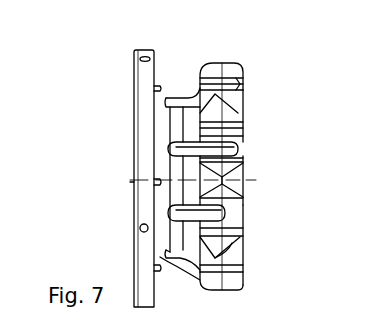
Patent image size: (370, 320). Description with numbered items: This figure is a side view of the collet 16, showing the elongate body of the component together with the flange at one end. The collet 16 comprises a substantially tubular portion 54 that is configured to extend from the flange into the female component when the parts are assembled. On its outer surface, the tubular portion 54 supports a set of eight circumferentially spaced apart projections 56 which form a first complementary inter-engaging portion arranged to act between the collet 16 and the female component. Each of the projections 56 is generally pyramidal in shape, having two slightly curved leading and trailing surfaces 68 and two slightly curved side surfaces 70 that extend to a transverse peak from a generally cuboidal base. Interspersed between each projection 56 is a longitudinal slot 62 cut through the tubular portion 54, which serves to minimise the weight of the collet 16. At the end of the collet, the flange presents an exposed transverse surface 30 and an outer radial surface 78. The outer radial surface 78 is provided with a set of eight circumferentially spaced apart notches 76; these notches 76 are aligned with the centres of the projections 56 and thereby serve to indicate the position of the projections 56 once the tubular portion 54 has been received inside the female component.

The collet 16 is at (84, 163).
The exposed transverse surface 30 is at (120, 89).
The tubular portion 54 is at (173, 95).
The projections 56 is at (226, 68).
The longitudinal slot 62 is at (208, 145).
The leading and trailing surfaces 68 is at (230, 253).
The side surfaces 70 is at (248, 158).
The notches 76 is at (136, 194).
The outer radial surface 78 is at (143, 73).